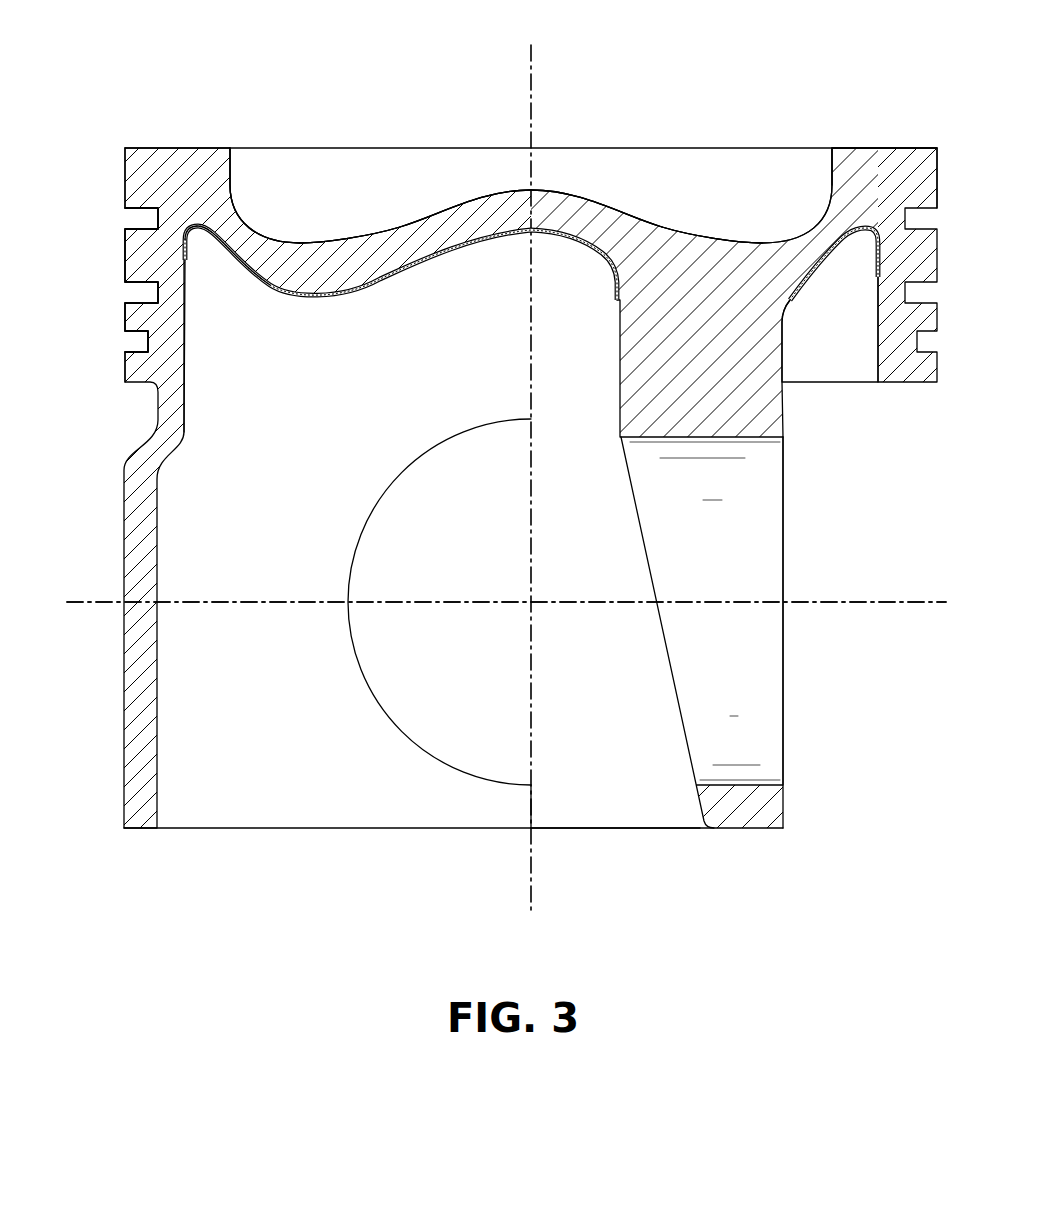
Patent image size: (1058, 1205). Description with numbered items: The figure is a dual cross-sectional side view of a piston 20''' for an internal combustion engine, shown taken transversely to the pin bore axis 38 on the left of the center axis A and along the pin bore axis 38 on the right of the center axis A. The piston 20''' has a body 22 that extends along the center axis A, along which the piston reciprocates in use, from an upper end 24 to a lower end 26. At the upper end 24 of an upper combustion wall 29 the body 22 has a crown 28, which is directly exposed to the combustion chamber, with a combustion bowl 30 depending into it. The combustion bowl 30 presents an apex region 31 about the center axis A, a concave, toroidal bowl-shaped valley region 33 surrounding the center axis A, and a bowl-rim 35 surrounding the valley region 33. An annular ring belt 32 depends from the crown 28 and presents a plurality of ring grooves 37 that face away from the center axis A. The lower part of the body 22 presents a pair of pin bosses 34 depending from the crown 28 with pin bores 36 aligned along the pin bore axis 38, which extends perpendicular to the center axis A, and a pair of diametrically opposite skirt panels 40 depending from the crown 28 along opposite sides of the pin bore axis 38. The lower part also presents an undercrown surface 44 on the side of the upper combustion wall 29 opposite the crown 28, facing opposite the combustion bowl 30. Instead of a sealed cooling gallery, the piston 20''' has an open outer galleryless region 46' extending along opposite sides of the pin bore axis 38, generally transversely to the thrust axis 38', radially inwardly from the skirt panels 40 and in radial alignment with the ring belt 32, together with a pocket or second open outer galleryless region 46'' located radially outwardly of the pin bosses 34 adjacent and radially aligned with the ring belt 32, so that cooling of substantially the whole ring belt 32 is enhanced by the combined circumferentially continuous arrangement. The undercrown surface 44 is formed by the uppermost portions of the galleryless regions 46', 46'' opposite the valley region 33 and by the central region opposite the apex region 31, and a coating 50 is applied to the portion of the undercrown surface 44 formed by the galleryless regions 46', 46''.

The piston 20''' is at (479, 420).
The body 22 is at (900, 158).
The upper end 24 is at (937, 148).
The lower end 26 is at (773, 829).
The crown 28 is at (177, 140).
The upper combustion wall 29 is at (232, 202).
The combustion bowl 30 is at (700, 164).
The apex region 31 is at (582, 184).
The ring belt 32 is at (88, 205).
The valley region 33 is at (258, 223).
The pin bosses 34 is at (727, 815).
The bowl-rim 35 is at (830, 148).
The pin bores 36 is at (743, 782).
The ring grooves 37 is at (134, 345).
The pin bore axis 38 is at (506, 569).
The thrust axis 38' is at (504, 571).
The skirt panels 40 is at (575, 828).
The undercrown surface 44 is at (424, 273).
The open outer galleryless region 46' is at (227, 329).
The second open outer galleryless region 46'' is at (830, 354).
The coating 50 is at (825, 253).
The center axis A is at (533, 95).